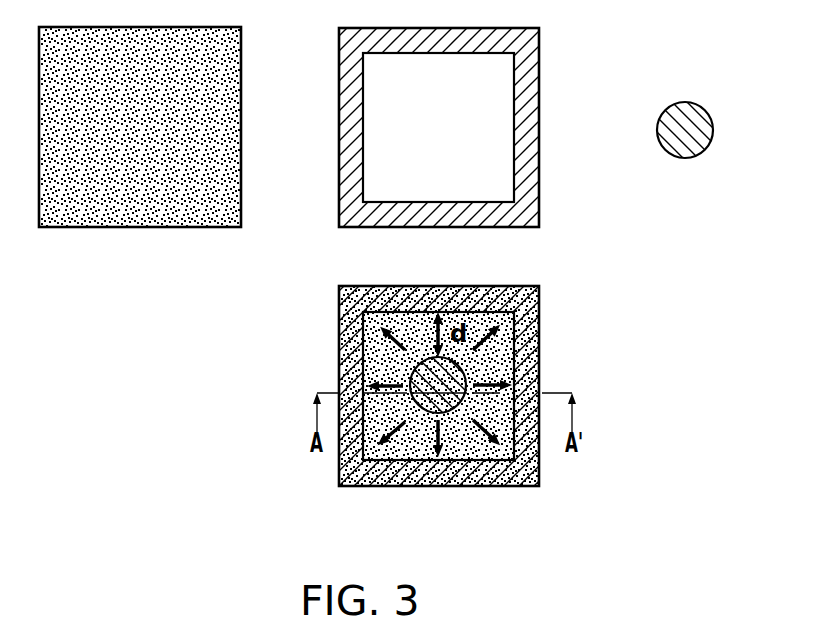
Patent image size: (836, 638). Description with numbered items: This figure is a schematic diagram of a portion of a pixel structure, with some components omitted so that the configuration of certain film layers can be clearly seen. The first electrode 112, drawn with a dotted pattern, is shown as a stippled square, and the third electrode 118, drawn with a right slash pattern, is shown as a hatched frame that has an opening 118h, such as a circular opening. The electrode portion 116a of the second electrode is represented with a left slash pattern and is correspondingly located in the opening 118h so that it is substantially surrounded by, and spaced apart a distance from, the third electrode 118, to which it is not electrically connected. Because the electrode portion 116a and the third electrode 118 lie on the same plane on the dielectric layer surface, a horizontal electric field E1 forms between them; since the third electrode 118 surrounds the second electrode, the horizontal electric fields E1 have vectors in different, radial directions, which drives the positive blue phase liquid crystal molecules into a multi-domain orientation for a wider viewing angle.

The first electrode 112 is at (228, 142).
The third electrode 118 is at (525, 128).
The opening 118h is at (519, 167).
The electrode portion 116a is at (686, 113).
The horizontal electric field E1 is at (447, 428).